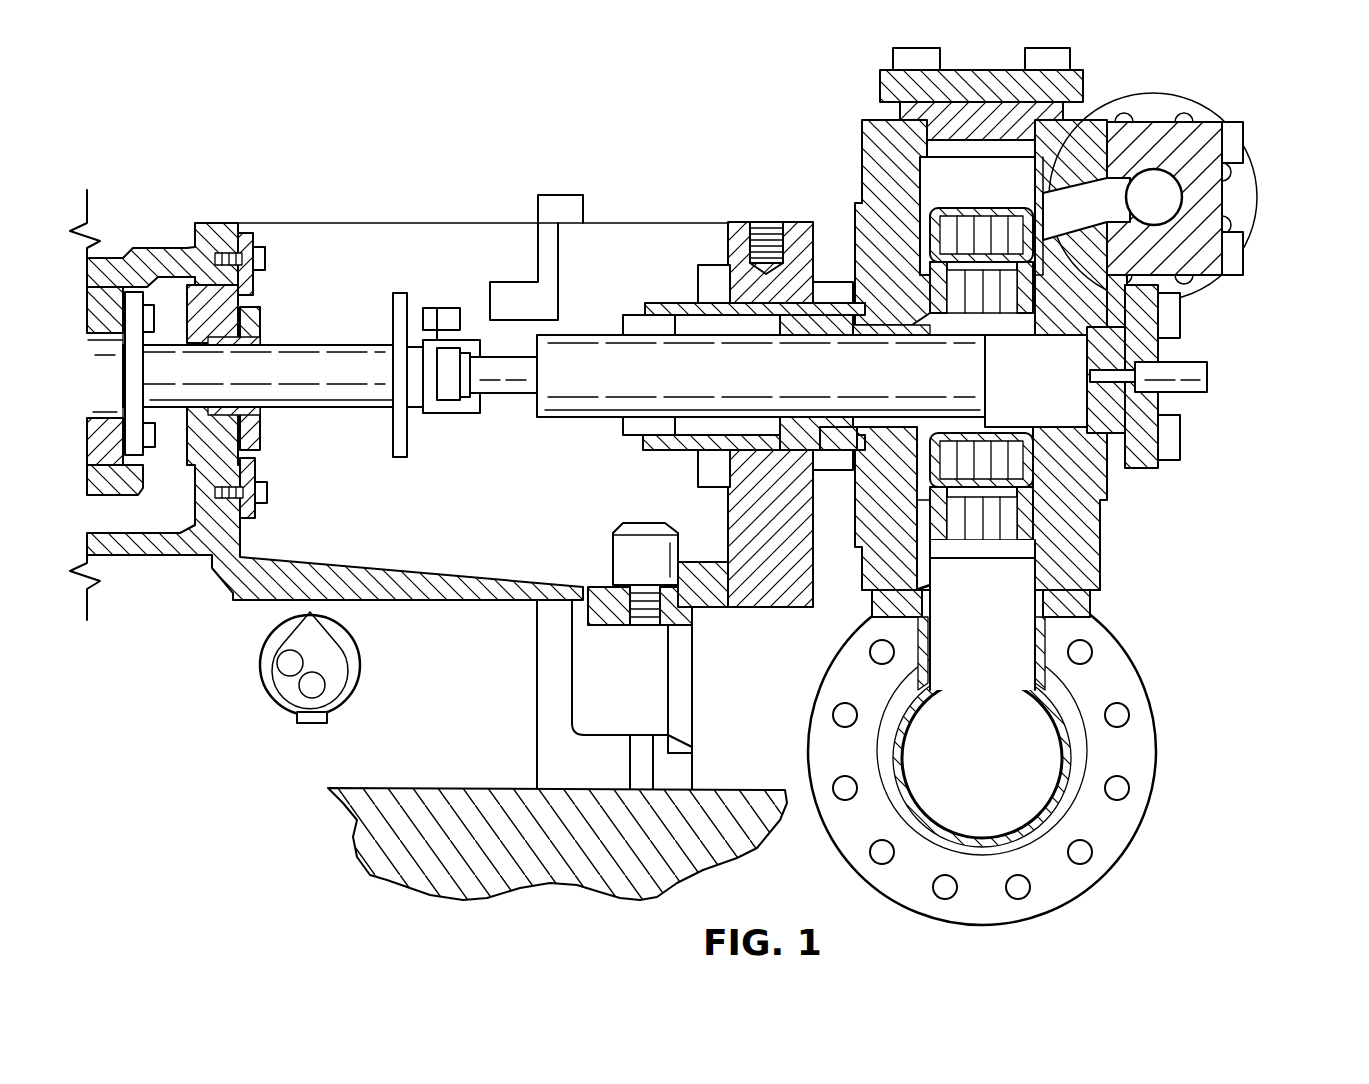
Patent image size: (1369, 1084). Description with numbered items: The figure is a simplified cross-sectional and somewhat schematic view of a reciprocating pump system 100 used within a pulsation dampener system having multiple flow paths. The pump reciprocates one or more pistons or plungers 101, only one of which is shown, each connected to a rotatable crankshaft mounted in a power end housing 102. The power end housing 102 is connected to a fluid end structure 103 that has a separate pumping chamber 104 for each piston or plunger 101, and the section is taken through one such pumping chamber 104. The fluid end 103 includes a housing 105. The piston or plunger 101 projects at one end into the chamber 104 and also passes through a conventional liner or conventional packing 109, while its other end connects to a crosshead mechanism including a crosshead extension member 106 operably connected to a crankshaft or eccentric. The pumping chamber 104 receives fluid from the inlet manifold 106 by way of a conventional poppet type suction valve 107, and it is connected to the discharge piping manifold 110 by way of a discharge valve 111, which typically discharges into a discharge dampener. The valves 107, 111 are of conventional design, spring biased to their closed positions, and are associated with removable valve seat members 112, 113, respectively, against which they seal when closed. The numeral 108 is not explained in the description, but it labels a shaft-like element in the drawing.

The reciprocating pump system 100 is at (448, 113).
The piston or plunger 101 is at (580, 418).
The power end housing 102 is at (233, 585).
The fluid end structure 103 is at (1110, 556).
The pumping chamber 104 is at (1058, 394).
The housing 105 is at (863, 577).
The inlet manifold 106 is at (1067, 742).
The suction valve 107 is at (1005, 535).
The input shaft 108 is at (325, 405).
The packing 109 is at (690, 310).
The discharge piping manifold 110 is at (1258, 197).
The discharge valve 111 is at (988, 210).
The valve seat member 112 is at (1050, 535).
The valve seat member 113 is at (938, 288).